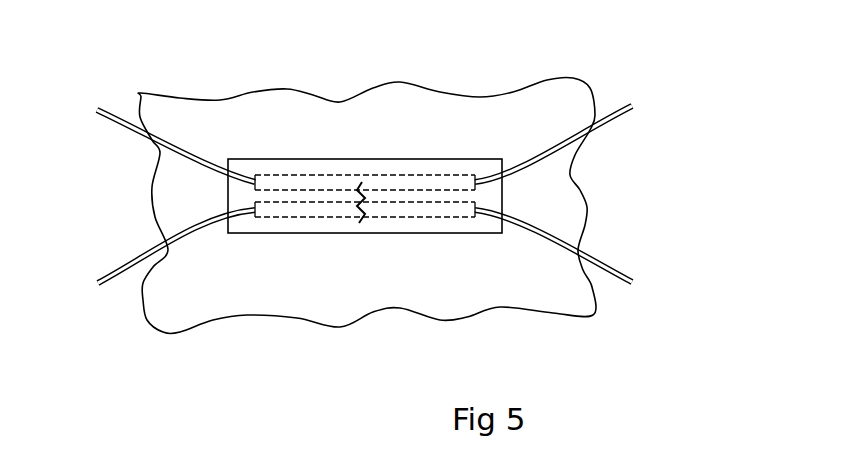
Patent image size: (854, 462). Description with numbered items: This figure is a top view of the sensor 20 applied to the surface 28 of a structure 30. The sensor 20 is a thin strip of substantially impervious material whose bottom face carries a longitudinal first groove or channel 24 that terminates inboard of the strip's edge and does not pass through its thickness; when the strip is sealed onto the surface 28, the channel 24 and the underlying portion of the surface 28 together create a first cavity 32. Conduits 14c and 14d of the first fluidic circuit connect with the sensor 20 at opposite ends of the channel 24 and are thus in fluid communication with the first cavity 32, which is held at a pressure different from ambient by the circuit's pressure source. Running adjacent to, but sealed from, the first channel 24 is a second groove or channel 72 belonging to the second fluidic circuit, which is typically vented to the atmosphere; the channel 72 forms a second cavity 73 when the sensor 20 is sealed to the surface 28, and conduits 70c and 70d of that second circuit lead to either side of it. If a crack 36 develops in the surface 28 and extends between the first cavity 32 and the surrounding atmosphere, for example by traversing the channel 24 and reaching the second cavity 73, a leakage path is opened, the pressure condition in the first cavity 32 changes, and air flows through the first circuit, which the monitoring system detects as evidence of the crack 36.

The conduit 14c is at (126, 122).
The conduit 14d is at (608, 122).
The conduit 70c is at (122, 277).
The conduit 70d is at (603, 271).
The sensor 20 is at (479, 153).
The first groove or channel 24 is at (265, 175).
The first cavity 32 is at (283, 183).
The surface 28 is at (563, 107).
The structure 30 is at (587, 210).
The crack 36 is at (362, 198).
The second groove or channel 72 is at (265, 218).
The second cavity 73 is at (293, 215).